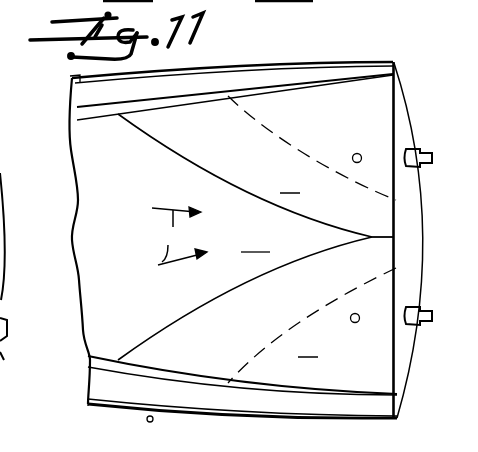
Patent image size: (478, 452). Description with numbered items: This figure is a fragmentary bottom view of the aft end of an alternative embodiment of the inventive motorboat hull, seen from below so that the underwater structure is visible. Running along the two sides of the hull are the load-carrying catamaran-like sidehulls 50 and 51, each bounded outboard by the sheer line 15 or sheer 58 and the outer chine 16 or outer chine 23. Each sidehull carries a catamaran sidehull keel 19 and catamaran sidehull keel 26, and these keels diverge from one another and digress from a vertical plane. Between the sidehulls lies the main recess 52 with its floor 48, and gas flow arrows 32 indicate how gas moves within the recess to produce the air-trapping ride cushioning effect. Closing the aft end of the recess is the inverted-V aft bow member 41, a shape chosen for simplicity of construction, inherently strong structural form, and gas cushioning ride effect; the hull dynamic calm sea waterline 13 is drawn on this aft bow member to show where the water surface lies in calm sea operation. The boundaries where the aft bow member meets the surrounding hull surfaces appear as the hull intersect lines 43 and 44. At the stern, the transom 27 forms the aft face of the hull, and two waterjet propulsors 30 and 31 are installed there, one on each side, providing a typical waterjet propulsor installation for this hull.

The sheer line 15 is at (240, 63).
The outer chine 16 is at (72, 80).
The catamaran sidehull 50 is at (116, 106).
The catamaran sidehull keel 19 is at (190, 97).
The hull intersect line 43 is at (77, 126).
The hull dynamic calm sea waterline 13 is at (289, 141).
The inverted-V aft bow member 41 is at (297, 266).
The waterjet propulsor 30 is at (393, 150).
The transom 27 is at (410, 139).
The gas flow arrows 32 is at (179, 236).
The floor 48 is at (315, 243).
The main recess 52 is at (122, 293).
The hull intersect line 44 is at (106, 358).
The waterjet propulsor 31 is at (359, 321).
The catamaran sidehull keel 26 is at (93, 374).
The sheer 58 is at (150, 416).
The catamaran sidehull 51 is at (200, 410).
The outer chine 23 is at (120, 408).